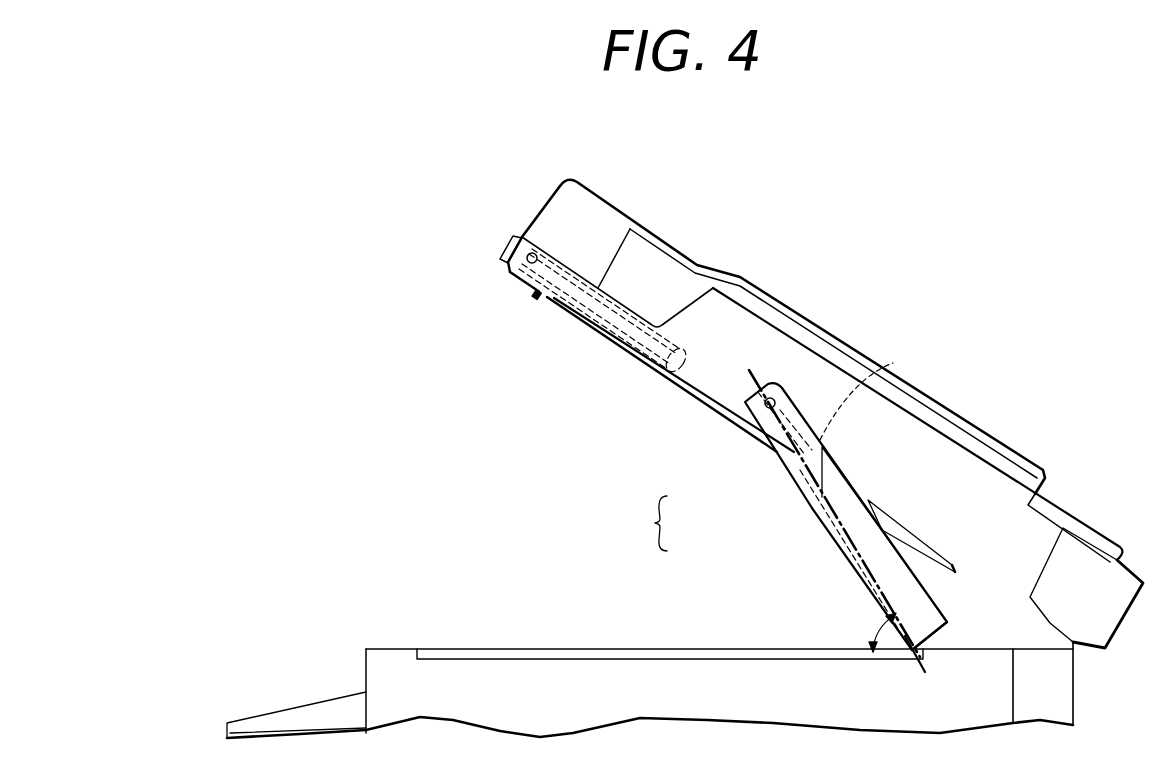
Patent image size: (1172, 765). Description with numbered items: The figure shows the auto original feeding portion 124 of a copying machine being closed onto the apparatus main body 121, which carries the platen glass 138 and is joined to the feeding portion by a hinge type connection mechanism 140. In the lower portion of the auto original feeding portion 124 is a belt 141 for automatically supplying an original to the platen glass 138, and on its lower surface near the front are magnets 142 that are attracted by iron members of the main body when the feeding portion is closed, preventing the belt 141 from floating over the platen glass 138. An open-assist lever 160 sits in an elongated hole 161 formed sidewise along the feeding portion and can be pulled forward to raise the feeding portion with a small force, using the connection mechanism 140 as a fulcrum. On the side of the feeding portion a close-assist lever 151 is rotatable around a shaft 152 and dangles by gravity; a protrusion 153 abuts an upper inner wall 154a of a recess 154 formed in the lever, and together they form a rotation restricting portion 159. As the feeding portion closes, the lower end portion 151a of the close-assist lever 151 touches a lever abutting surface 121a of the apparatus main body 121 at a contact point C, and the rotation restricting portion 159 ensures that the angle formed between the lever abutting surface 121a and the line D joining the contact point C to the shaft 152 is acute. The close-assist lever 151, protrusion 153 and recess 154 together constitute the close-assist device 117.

The close-assist device 117 is at (716, 425).
The apparatus main body 121 is at (1078, 688).
The lever abutting surface 121a is at (933, 647).
The auto original feeding portion 124 is at (533, 314).
The platen glass 138 is at (483, 650).
The connection mechanism 140 is at (1058, 622).
The belt 141 is at (607, 347).
The magnets 142 is at (522, 287).
The close-assist lever 151 is at (812, 508).
The lower end portion 151a is at (925, 653).
The shaft 152 is at (757, 420).
The protrusion 153 is at (780, 443).
The recess 154 is at (793, 463).
The upper inner wall 154a is at (899, 357).
The rotation restricting portion 159 is at (640, 523).
The open-assist lever 160 is at (513, 239).
The elongated hole 161 is at (673, 393).
The line D is at (796, 472).
The contact point C is at (910, 653).